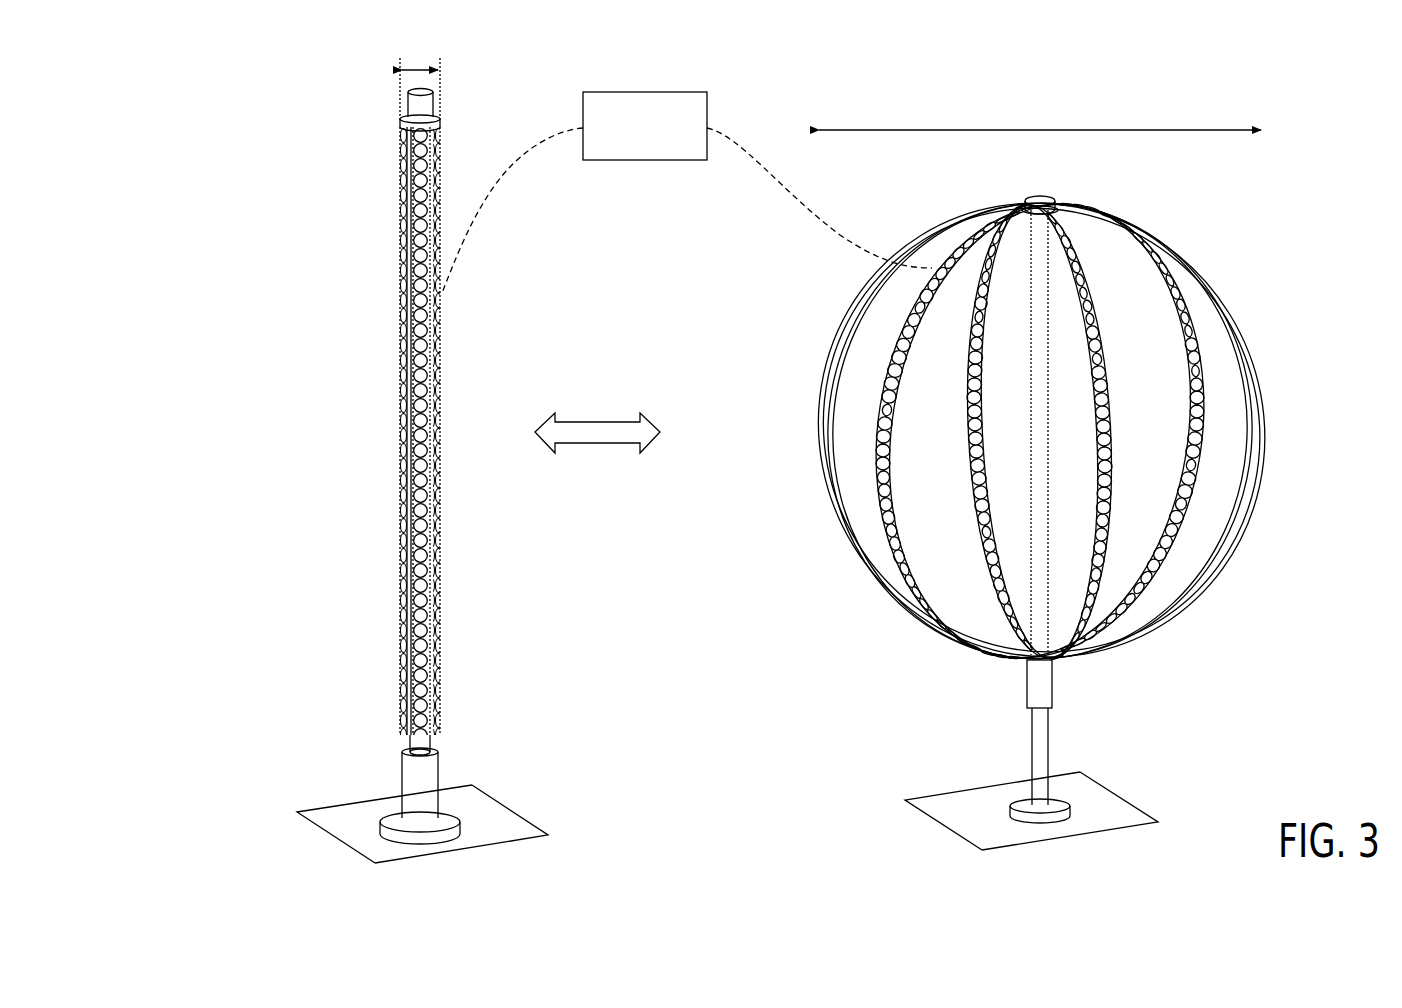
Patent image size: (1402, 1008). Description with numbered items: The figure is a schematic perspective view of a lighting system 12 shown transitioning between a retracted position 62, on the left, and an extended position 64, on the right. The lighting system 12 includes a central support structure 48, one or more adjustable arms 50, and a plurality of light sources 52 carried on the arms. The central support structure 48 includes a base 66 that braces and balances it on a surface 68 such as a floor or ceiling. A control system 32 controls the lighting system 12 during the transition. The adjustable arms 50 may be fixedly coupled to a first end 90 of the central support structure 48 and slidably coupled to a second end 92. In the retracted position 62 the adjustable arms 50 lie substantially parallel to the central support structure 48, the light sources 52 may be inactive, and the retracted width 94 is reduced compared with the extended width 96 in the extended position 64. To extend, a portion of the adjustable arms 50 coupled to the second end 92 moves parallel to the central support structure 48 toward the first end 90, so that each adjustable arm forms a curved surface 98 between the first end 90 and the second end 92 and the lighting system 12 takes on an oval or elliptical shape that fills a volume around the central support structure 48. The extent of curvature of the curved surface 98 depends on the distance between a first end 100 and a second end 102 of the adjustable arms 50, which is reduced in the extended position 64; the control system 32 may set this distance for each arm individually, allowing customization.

The lighting system 12 is at (188, 147).
The control system 32 is at (650, 92).
The central support structure 48 is at (406, 105).
The adjustable arms 50 is at (426, 202).
The light sources 52 is at (403, 370).
The retracted position 62 is at (437, 850).
The extended position 64 is at (1040, 852).
The base 66 is at (357, 812).
The surface 68 is at (490, 815).
The first end of the central support structure 90 is at (322, 170).
The second end of the central support structure 92 is at (370, 694).
The retracted width 94 is at (423, 67).
The extended width 96 is at (1040, 130).
The curved surface 98 is at (1282, 428).
The first end of the adjustable arms 100 is at (387, 128).
The second end of the adjustable arms 102 is at (398, 738).